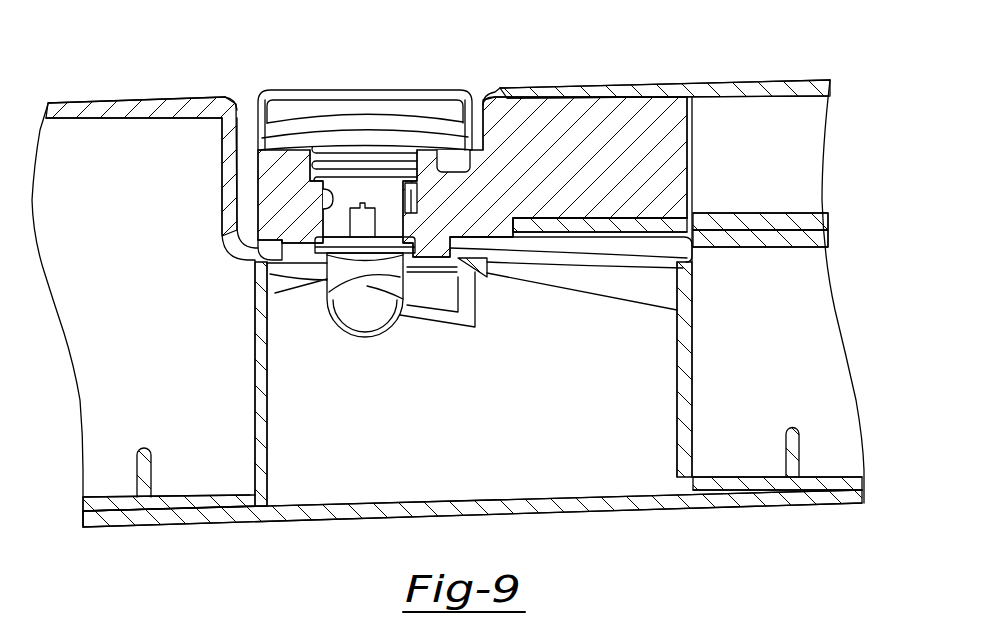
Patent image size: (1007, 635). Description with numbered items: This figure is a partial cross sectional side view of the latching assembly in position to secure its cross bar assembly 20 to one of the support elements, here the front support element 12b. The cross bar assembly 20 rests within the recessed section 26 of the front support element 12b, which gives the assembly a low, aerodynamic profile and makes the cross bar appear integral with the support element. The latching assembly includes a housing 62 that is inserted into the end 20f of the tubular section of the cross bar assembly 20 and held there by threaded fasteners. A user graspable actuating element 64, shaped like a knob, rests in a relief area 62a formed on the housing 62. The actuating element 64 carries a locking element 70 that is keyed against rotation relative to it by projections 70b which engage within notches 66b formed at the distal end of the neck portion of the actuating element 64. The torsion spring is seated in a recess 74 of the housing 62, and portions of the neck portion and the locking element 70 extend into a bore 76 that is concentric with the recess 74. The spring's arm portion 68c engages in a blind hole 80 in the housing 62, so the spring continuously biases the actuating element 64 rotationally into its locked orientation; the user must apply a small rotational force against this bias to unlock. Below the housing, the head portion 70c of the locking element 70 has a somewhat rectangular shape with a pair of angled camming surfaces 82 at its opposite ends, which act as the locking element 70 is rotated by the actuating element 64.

The front support element 12b is at (135, 135).
The cross bar assembly 20 is at (799, 78).
The end of the cross bar assembly 20f is at (727, 118).
The recessed section 26 is at (247, 132).
The housing 62 is at (502, 113).
The relief area 62a is at (477, 93).
The actuating element 64 is at (307, 110).
The notches 66b is at (367, 212).
The arm portion 68c is at (460, 187).
The locking element 70 is at (310, 279).
The projections 70b is at (357, 218).
The head portion 70c is at (360, 318).
The recess 74 is at (308, 179).
The bore 76 is at (322, 200).
The blind hole 80 is at (417, 197).
The camming surfaces 82 is at (368, 285).